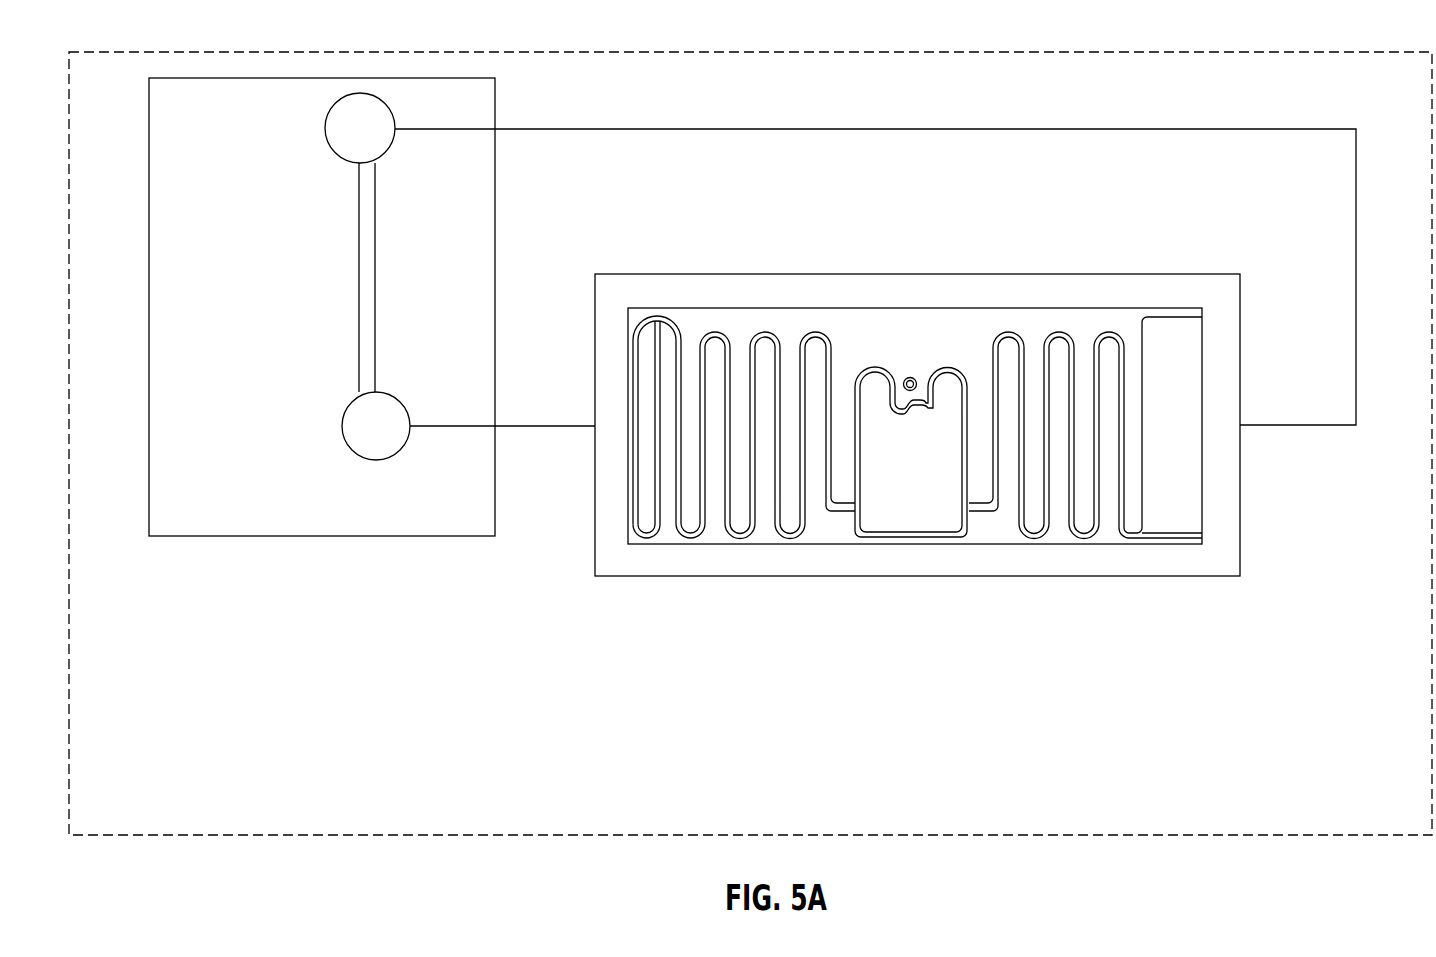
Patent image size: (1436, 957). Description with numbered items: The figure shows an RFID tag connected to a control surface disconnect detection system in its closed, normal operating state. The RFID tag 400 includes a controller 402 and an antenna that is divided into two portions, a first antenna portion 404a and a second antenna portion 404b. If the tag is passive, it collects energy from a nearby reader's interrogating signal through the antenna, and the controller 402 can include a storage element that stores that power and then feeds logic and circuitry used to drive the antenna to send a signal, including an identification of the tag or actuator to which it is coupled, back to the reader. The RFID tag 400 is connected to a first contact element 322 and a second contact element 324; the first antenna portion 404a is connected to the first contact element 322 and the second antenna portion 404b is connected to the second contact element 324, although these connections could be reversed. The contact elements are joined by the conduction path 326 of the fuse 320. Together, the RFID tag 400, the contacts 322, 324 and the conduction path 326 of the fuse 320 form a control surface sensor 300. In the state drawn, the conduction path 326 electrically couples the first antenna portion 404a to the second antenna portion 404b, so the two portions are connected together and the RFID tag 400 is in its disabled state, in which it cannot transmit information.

The control surface sensor 300 is at (138, 47).
The fuse 320 is at (322, 537).
The first contact element 322 is at (342, 423).
The second contact element 324 is at (326, 131).
The conduction path 326 is at (377, 272).
The RFID tag 400 is at (728, 642).
The controller 402 is at (913, 512).
The first antenna portion 404a is at (715, 330).
The second antenna portion 404b is at (1057, 332).